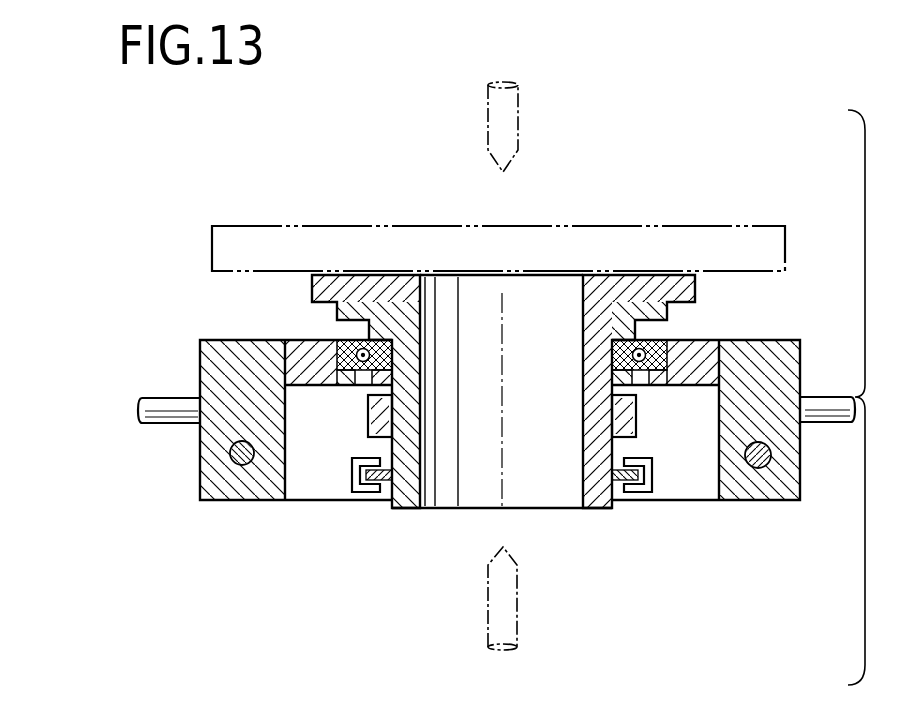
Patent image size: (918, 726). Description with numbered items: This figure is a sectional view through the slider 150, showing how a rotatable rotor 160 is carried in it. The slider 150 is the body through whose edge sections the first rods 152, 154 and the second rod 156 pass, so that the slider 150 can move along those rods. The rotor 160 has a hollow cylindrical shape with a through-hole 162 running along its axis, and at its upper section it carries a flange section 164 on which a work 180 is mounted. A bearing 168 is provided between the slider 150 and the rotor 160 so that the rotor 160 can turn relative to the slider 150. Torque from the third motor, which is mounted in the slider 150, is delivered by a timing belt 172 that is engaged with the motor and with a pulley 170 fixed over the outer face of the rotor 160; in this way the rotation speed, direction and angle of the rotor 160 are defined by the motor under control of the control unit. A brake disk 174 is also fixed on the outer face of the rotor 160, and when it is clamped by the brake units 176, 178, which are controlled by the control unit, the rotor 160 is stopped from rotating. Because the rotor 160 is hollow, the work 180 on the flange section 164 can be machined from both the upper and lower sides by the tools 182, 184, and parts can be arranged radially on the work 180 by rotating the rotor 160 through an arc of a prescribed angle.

The slider 150 is at (190, 503).
The first rod 152 is at (247, 462).
The first rod 154 is at (758, 468).
The second rod 156 is at (161, 425).
The rotor 160 is at (697, 299).
The through-hole 162 is at (418, 462).
The flange section 164 is at (632, 275).
The bearing 168 is at (355, 340).
The pulley 170 is at (372, 440).
The timing belt 172 is at (368, 412).
The brake disk 174 is at (614, 497).
The brake unit 176 is at (655, 472).
The brake unit 178 is at (367, 494).
The work 180 is at (240, 226).
The tool 182 is at (518, 100).
The tool 184 is at (517, 618).